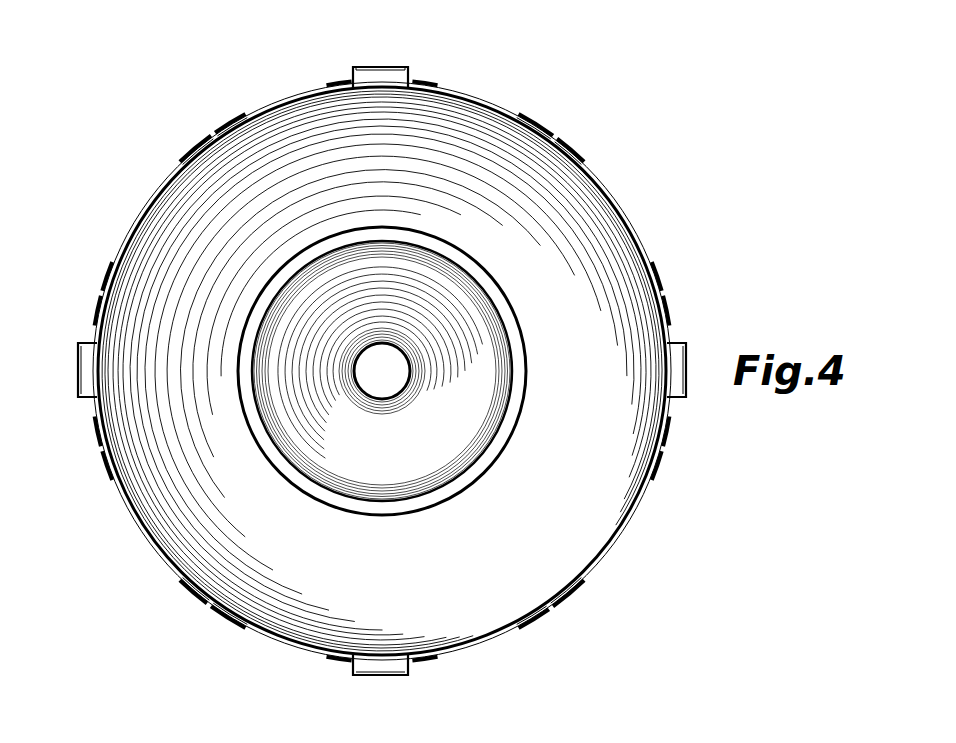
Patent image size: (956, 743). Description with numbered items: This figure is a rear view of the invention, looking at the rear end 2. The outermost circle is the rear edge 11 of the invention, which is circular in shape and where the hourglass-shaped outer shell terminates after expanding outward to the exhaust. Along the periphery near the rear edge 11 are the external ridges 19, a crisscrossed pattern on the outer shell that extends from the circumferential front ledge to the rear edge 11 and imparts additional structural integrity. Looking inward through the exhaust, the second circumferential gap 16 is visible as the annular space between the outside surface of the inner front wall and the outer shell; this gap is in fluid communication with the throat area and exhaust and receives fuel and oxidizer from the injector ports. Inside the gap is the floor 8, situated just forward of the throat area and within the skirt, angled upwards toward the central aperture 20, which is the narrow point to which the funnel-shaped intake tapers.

The rear end 2 is at (128, 220).
The floor 8 is at (450, 457).
The rear edge 11 is at (268, 108).
The second circumferential gap 16 is at (331, 247).
The external ridges 19 is at (565, 143).
The central aperture 20 is at (388, 360).